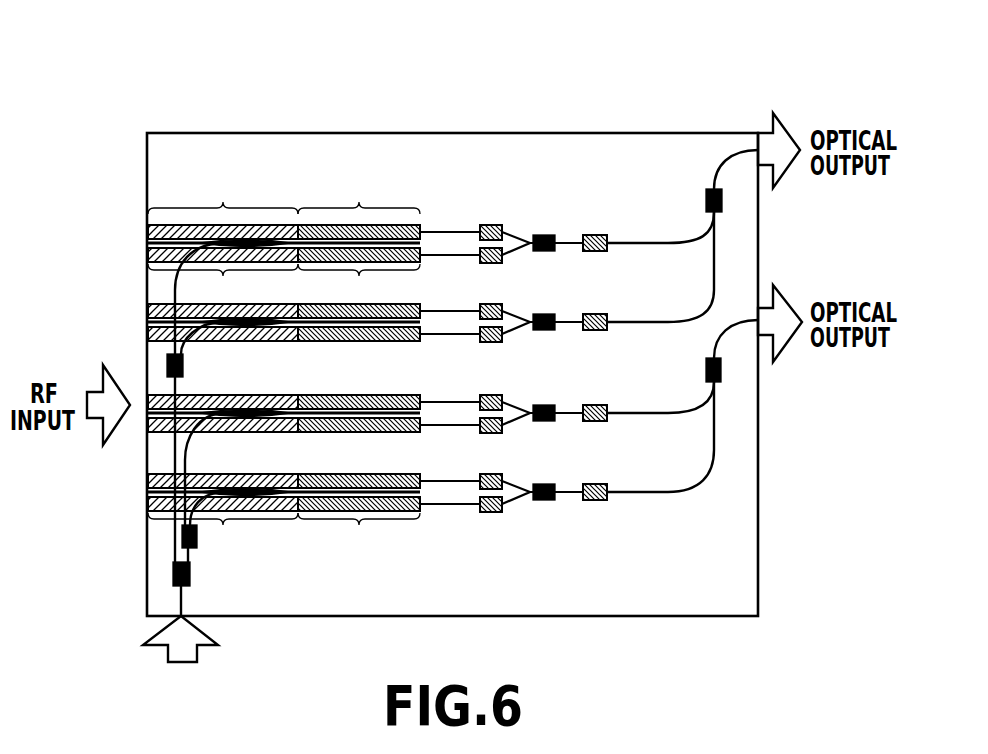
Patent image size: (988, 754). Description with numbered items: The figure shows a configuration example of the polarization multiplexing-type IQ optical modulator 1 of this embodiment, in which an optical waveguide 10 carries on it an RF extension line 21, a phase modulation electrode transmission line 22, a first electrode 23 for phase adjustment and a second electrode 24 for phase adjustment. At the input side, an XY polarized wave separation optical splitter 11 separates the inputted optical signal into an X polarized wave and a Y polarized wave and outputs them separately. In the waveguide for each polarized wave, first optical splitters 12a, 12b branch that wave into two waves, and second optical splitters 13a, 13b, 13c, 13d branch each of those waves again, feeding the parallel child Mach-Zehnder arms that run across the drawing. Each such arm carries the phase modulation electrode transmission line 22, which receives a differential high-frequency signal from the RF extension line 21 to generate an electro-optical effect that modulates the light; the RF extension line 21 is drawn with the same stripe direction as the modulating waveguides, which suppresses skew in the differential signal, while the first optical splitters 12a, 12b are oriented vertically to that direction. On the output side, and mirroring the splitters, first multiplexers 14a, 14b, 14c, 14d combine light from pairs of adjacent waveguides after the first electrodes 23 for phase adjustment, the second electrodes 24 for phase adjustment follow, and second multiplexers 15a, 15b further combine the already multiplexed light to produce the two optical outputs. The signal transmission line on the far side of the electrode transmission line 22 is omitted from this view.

The polarization multiplexing-type IQ optical modulator 1 is at (722, 66).
The optical waveguide 10 is at (723, 168).
The XY polarized wave separation optical splitter 11 is at (178, 578).
The first optical splitter 12a is at (183, 365).
The first optical splitter 12b is at (193, 542).
The second optical splitter 13a is at (246, 243).
The second optical splitter 13b is at (245, 322).
The second optical splitter 13c is at (245, 413).
The second optical splitter 13d is at (245, 492).
The first multiplexer 14a is at (545, 235).
The first multiplexer 14b is at (545, 314).
The first multiplexer 14c is at (545, 405).
The first multiplexer 14d is at (545, 484).
The second multiplexer 15a is at (706, 200).
The second multiplexer 15b is at (706, 369).
The RF extension line 21 is at (258, 539).
The phase modulation electrode transmission line 22 is at (379, 539).
The first electrode for phase adjustment 23 is at (490, 225).
The second electrode for phase adjustment 24 is at (595, 235).